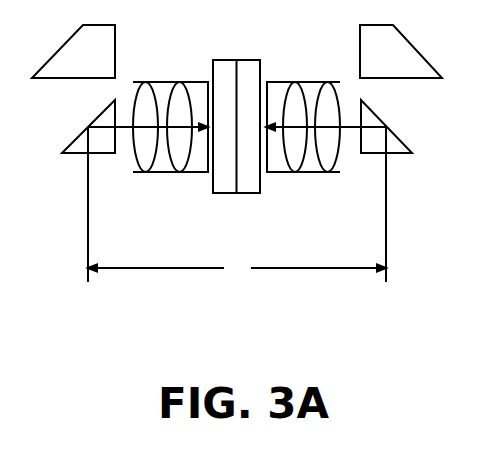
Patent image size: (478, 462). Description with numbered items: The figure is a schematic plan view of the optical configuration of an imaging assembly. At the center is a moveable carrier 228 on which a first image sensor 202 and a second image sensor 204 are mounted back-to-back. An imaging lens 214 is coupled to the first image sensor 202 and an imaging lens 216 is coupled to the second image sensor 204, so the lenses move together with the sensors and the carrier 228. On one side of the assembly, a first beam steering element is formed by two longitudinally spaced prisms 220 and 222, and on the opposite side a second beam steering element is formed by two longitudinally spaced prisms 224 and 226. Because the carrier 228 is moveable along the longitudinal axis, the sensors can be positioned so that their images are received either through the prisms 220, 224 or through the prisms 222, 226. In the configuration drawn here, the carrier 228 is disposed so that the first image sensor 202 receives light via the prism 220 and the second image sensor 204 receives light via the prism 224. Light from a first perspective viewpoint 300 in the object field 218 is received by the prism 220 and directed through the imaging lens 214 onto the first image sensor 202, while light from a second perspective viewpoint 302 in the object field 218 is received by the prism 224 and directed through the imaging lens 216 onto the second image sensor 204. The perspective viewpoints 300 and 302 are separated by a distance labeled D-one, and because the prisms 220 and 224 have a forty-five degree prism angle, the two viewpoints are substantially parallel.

The first image sensor 202 is at (267, 173).
The second image sensor 204 is at (208, 173).
The imaging lens 214 is at (332, 82).
The imaging lens 216 is at (182, 82).
The object field 218 is at (258, 325).
The prism 220 is at (398, 139).
The prism 222 is at (398, 28).
The prism 224 is at (74, 140).
The prism 226 is at (68, 28).
The moveable carrier 228 is at (236, 60).
The perspective viewpoint 300 is at (386, 213).
The perspective viewpoint 302 is at (88, 211).